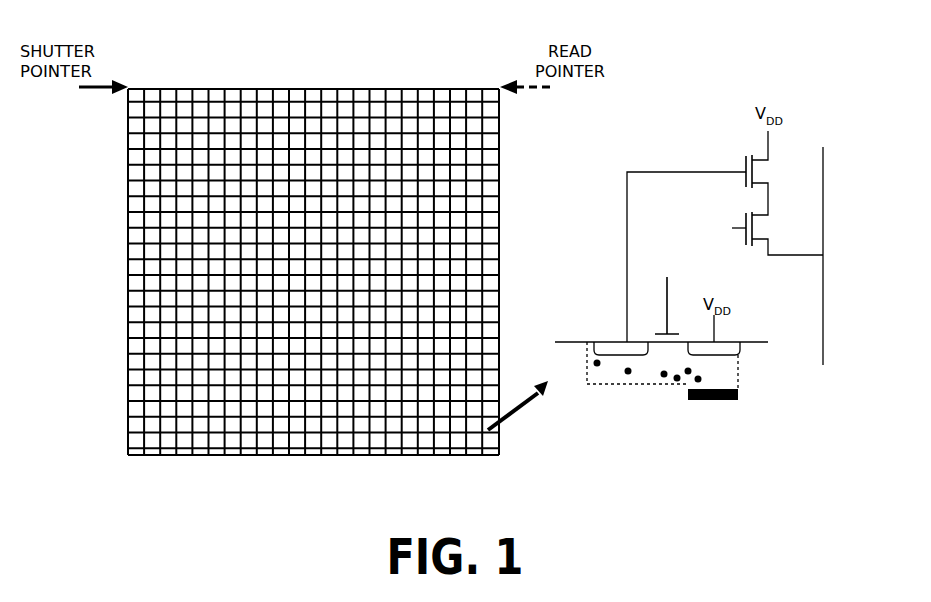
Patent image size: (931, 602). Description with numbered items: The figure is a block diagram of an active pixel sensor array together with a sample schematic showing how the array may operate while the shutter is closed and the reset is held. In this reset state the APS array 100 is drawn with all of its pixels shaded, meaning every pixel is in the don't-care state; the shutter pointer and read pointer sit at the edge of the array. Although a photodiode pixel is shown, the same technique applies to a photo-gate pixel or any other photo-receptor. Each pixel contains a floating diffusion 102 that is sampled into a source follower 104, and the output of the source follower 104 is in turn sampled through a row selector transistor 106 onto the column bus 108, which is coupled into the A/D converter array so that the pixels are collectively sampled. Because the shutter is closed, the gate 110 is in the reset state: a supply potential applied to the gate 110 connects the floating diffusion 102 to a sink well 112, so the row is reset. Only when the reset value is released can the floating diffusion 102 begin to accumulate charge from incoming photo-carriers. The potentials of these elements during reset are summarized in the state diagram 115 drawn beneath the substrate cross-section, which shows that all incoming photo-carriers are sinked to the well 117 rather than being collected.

The APS array 100 is at (528, 156).
The floating diffusion 102 is at (602, 350).
The source follower 104 is at (715, 248).
The row selector transistor 106 is at (730, 229).
The column bus 108 is at (823, 147).
The gate 110 is at (669, 308).
The sink well 112 is at (733, 349).
The state diagram 115 is at (600, 402).
The well 117 is at (711, 401).